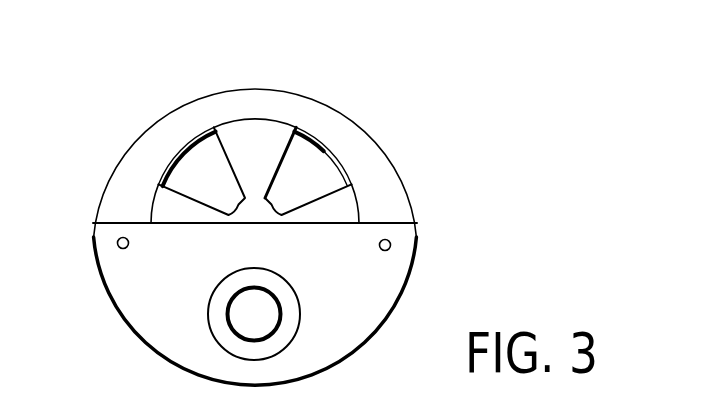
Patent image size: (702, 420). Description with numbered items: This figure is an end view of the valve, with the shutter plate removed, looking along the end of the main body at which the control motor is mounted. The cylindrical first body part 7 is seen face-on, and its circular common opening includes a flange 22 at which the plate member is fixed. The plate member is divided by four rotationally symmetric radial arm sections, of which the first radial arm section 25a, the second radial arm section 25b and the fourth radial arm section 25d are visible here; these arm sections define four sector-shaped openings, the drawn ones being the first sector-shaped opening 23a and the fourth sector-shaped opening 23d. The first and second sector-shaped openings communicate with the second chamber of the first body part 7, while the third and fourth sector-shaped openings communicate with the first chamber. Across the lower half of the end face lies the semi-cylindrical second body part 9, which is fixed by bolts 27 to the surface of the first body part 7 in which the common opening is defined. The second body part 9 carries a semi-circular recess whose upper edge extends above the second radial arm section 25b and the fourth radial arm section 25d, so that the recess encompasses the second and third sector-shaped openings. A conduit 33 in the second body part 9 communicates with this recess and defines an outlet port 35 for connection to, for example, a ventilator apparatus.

The first body part 7 is at (393, 160).
The second body part 9 is at (382, 310).
The flange 22 is at (185, 147).
The first sector-shaped opening 23a is at (312, 167).
The fourth sector-shaped opening 23d is at (192, 175).
The first radial arm section 25a is at (258, 132).
The second radial arm section 25b is at (346, 202).
The fourth radial arm section 25d is at (152, 212).
The bolts 27 is at (118, 247).
The conduit 33 is at (218, 342).
The outlet port 35 is at (270, 305).